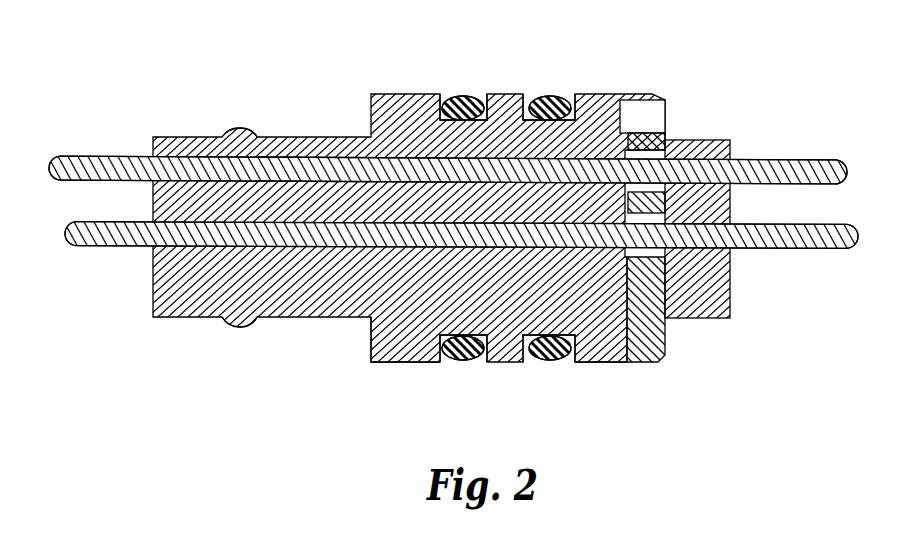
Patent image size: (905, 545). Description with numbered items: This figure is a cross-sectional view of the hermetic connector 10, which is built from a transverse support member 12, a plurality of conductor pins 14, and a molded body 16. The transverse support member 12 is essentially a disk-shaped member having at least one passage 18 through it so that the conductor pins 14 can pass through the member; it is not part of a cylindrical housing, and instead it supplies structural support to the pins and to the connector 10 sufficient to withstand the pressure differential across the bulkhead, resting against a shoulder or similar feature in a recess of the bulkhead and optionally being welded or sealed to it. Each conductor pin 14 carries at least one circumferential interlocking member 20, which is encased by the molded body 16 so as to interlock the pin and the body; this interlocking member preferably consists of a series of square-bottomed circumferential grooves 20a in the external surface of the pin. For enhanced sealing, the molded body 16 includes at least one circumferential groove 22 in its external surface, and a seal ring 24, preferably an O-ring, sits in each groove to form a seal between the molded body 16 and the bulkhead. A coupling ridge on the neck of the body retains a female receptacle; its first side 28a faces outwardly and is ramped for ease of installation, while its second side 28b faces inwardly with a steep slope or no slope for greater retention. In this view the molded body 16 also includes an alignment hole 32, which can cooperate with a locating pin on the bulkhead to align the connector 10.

The connector 10 is at (461, 232).
The transverse support member 12 is at (665, 353).
The conductor pins 14 is at (785, 160).
The molded body 16 is at (600, 363).
The passage 18 is at (680, 140).
The circumferential interlocking member 20 is at (296, 158).
The square-bottomed circumferential grooves 20a is at (438, 245).
The circumferential groove 22 is at (483, 93).
The seal ring 24 is at (451, 95).
The first side 28a is at (232, 130).
The second side 28b is at (240, 327).
The alignment hole 32 is at (667, 110).